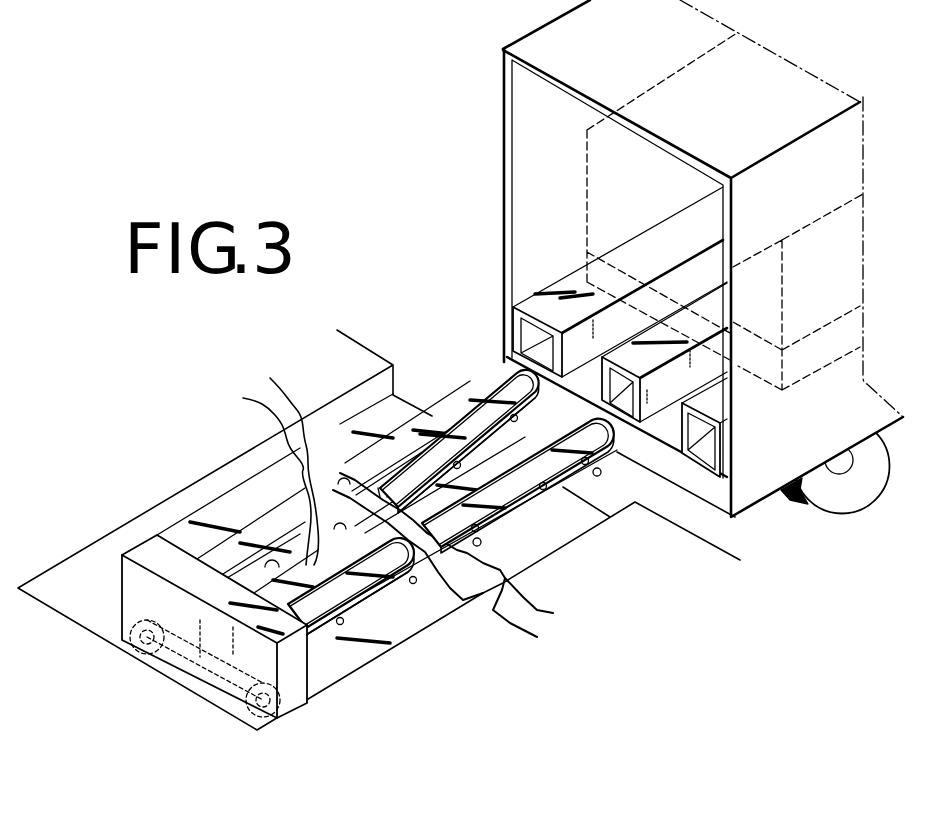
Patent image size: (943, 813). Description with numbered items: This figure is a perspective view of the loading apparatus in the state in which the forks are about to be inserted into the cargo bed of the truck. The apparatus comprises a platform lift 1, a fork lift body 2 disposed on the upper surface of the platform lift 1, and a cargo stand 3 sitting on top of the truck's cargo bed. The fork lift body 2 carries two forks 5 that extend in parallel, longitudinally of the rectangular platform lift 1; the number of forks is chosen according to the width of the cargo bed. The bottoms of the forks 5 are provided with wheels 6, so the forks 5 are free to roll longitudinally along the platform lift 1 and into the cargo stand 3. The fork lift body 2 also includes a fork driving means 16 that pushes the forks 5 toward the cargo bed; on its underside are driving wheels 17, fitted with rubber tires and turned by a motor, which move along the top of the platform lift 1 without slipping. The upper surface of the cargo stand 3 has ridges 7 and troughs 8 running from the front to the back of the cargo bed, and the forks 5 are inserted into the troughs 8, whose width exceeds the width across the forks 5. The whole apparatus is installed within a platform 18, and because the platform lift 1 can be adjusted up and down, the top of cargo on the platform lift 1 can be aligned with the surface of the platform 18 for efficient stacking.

The platform lift 1 is at (205, 494).
The fork lift body 2 is at (321, 660).
The cargo stand 3 is at (682, 447).
The forks 5 is at (520, 498).
The wheels 6 is at (453, 453).
The ridges 7 is at (531, 301).
The troughs 8 is at (590, 376).
The fork driving means 16 is at (133, 597).
The driving wheels 17 is at (298, 722).
The platform 18 is at (108, 522).